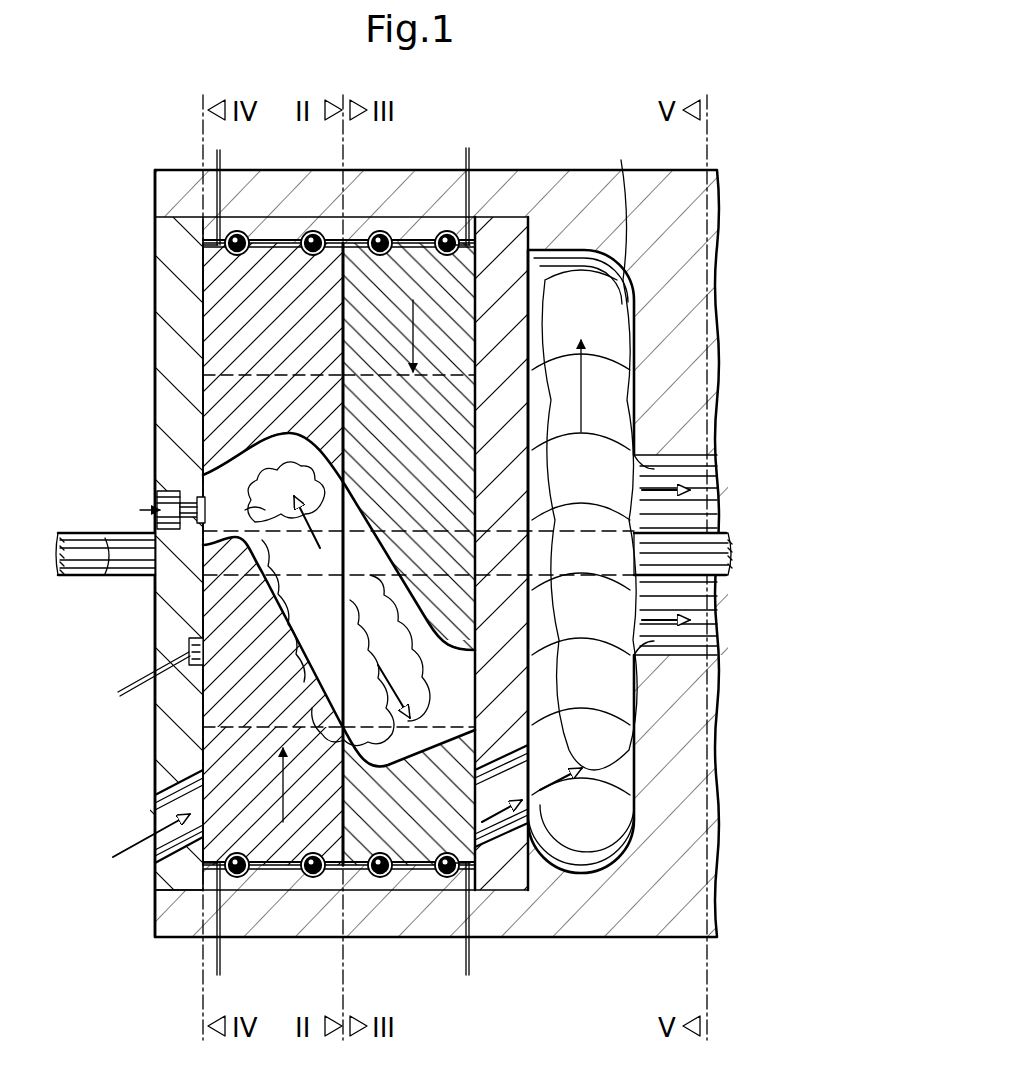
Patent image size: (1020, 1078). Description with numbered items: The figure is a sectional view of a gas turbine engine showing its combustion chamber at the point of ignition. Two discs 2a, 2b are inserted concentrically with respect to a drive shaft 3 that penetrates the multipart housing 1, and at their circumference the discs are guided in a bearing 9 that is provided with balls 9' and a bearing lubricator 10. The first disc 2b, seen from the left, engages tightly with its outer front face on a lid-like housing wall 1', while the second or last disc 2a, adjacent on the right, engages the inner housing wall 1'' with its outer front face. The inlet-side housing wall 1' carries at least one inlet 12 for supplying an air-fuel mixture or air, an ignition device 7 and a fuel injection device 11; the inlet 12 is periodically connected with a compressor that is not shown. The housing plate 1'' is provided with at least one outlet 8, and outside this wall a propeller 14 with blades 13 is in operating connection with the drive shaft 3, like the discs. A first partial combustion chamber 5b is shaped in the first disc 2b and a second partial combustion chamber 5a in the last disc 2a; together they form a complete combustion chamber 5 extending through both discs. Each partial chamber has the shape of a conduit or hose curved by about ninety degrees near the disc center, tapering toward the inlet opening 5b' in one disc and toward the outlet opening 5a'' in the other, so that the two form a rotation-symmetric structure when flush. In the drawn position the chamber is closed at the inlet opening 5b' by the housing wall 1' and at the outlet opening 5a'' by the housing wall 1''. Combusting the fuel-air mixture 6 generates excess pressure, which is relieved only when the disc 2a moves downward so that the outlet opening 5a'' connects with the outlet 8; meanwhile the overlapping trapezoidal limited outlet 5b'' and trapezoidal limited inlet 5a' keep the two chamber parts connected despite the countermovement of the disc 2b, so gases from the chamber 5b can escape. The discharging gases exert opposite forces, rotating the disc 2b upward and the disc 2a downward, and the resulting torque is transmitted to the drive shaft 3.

The housing 1 is at (403, 561).
The lid-like housing wall 1' is at (136, 553).
The inner housing wall 1'' is at (501, 561).
The second disc 2a is at (431, 425).
The first disc 2b is at (287, 333).
The drive shaft 3 is at (75, 572).
The combustion chamber 5 is at (418, 600).
The second partial combustion chamber 5a is at (371, 660).
The trapezoidal limited inlet 5a' is at (364, 712).
The outlet opening 5a'' is at (451, 651).
The first partial combustion chamber 5b is at (289, 572).
The inlet opening 5b' is at (246, 473).
The trapezoidal limited outlet 5b'' is at (293, 595).
The fuel-air-mixture 6 is at (242, 510).
The ignition device 7 is at (158, 507).
The outlet 8 is at (520, 882).
The bearing 9 is at (339, 561).
The balls 9' is at (342, 561).
The bearing lubricator 10 is at (235, 163).
The fuel injection device 11 is at (118, 690).
The inlet 12 is at (162, 818).
The blades 13 is at (622, 516).
The propeller 14 is at (612, 505).